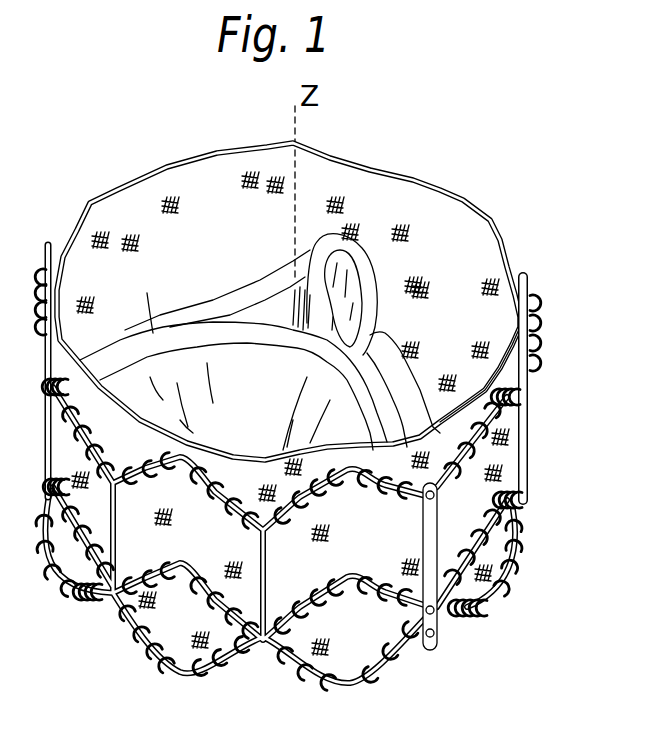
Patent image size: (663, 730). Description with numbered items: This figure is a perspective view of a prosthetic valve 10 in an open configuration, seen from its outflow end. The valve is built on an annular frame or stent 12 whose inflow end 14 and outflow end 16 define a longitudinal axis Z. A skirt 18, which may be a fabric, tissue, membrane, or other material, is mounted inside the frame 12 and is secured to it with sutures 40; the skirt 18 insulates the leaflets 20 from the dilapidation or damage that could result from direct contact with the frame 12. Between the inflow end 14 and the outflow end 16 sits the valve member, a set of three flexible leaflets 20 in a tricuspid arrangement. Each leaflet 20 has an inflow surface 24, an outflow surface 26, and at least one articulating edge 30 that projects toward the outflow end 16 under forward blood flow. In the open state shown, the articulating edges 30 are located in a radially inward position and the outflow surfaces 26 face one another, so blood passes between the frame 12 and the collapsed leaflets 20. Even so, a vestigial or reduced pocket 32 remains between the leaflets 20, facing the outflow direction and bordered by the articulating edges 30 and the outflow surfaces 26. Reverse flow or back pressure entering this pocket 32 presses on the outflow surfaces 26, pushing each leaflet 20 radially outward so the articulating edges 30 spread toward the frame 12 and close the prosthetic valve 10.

The prosthetic valve 10 is at (96, 158).
The frame 12 is at (532, 298).
The inflow end 14 is at (437, 650).
The outflow end 16 is at (370, 170).
The skirt 18 is at (477, 240).
The leaflets 20 is at (222, 368).
The inflow surface 24 is at (350, 280).
The outflow surface 26 is at (303, 317).
The articulating edge 30 is at (357, 245).
The pocket 32 is at (327, 320).
The sutures 40 is at (527, 433).